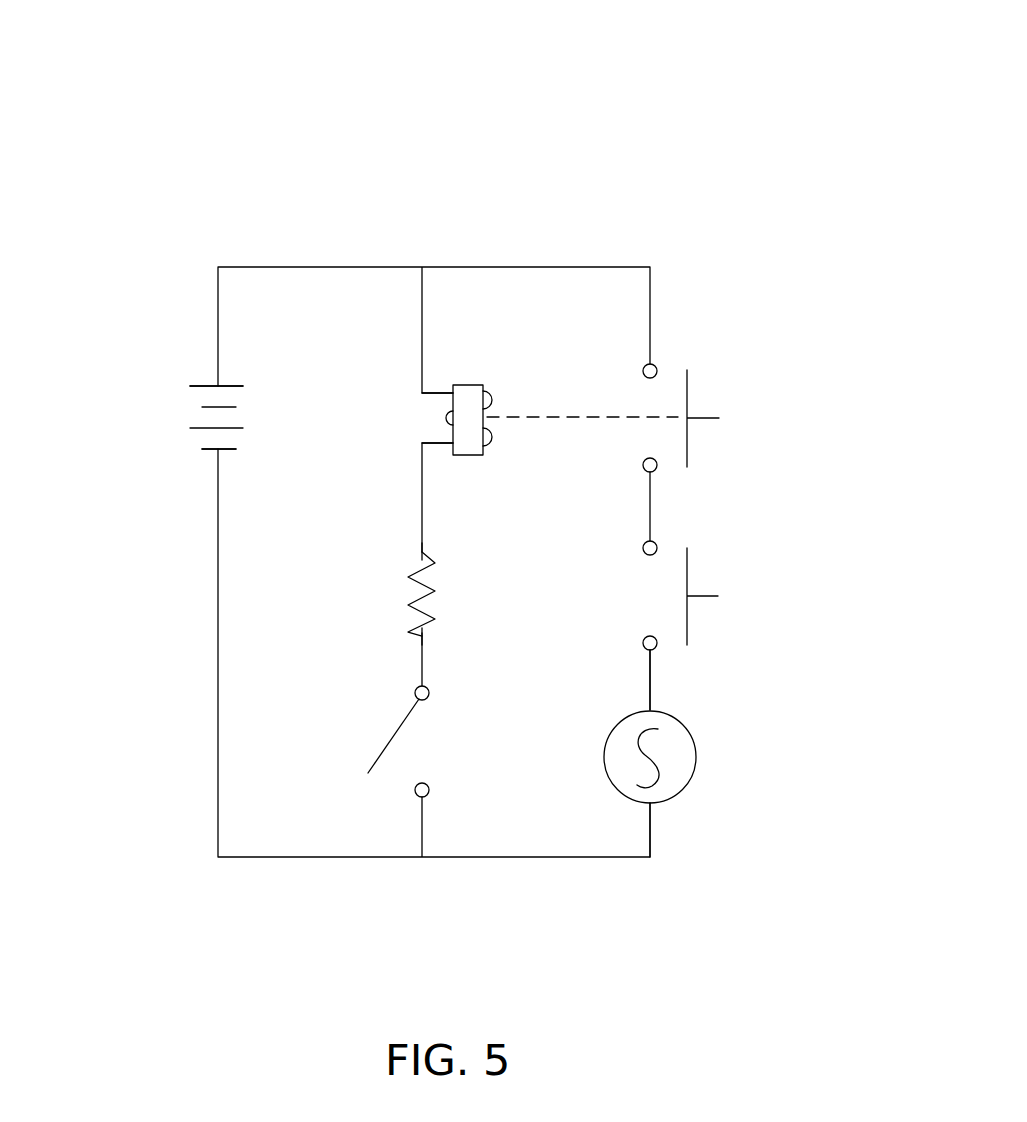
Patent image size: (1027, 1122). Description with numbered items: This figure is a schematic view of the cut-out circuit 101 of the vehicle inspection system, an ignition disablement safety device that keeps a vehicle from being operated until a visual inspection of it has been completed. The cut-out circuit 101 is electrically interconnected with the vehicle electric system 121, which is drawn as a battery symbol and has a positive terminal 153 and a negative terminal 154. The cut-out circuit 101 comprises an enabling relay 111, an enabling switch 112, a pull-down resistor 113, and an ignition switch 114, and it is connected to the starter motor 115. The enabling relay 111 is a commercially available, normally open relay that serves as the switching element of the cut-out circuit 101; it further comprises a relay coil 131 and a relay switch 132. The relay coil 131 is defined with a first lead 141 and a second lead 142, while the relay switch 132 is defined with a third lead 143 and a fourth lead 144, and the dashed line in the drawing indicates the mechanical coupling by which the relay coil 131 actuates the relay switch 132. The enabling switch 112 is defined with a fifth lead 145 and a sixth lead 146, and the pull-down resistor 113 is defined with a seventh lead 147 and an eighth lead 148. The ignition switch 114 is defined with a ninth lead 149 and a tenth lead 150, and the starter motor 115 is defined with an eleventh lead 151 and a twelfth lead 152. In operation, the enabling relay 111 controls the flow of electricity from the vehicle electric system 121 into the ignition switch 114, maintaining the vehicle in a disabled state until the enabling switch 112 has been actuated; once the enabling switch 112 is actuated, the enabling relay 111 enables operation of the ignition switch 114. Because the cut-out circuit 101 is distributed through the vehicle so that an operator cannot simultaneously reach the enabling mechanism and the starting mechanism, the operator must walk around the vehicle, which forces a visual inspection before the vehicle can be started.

The cut-out circuit 101 is at (175, 125).
The vehicle electric system 121 is at (180, 408).
The positive terminal 153 is at (217, 370).
The negative terminal 154 is at (217, 458).
The relay coil 131 is at (467, 383).
The first lead 141 is at (418, 377).
The second lead 142 is at (418, 451).
The relay switch 132 is at (693, 375).
The enabling relay 111 is at (787, 414).
The ignition switch 114 is at (693, 562).
The third lead 143 is at (645, 365).
The fourth lead 144 is at (645, 470).
The ninth lead 149 is at (645, 553).
The tenth lead 150 is at (645, 648).
The pull-down resistor 113 is at (438, 588).
The seventh lead 147 is at (416, 541).
The eighth lead 148 is at (418, 650).
The enabling switch 112 is at (423, 740).
The fifth lead 145 is at (414, 688).
The sixth lead 146 is at (428, 786).
The starter motor 115 is at (697, 755).
The eleventh lead 151 is at (655, 700).
The twelfth lead 152 is at (655, 813).